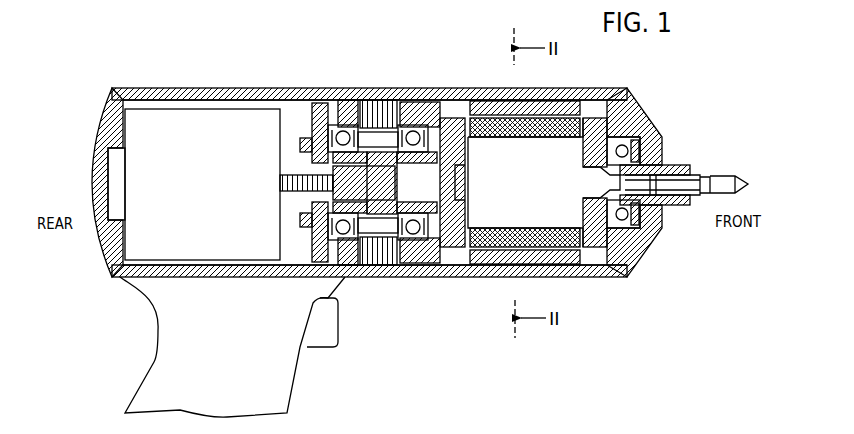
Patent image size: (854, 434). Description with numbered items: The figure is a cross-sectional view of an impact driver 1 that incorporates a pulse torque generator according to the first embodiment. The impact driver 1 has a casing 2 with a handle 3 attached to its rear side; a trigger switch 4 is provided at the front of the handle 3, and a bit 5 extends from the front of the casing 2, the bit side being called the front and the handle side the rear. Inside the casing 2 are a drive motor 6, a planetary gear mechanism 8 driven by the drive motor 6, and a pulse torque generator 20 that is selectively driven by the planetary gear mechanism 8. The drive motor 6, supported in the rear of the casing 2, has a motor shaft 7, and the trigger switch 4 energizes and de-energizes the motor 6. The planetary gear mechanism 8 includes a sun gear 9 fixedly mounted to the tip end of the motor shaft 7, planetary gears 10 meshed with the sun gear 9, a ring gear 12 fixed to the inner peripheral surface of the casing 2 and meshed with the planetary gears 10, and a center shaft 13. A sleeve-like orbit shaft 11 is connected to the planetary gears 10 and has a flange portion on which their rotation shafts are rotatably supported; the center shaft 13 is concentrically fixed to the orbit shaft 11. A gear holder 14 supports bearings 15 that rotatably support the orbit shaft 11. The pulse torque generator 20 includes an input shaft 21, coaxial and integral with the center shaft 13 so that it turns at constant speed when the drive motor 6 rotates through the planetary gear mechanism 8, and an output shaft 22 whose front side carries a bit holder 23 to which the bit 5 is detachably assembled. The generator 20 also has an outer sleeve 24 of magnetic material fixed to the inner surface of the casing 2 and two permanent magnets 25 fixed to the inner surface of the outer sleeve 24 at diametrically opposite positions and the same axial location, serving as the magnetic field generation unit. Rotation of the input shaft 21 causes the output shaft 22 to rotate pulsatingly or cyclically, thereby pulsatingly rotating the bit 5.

The impact driver 1 is at (464, 360).
The casing 2 is at (175, 88).
The handle 3 is at (160, 357).
The trigger switch 4 is at (317, 335).
The bit 5 is at (715, 176).
The drive motor 6 is at (137, 245).
The motor shaft 7 is at (300, 180).
The planetary gear mechanism 8 is at (480, 328).
The sun gear 9 is at (340, 278).
The planetary gears 10 is at (380, 277).
The orbit shaft 11 is at (440, 277).
The ring gear 12 is at (400, 277).
The center shaft 13 is at (462, 277).
The gear holder 14 is at (407, 103).
The bearings 15 is at (338, 103).
The pulse torque generator 20 is at (712, 328).
The input shaft 21 is at (608, 278).
The output shaft 22 is at (645, 270).
The bit holder 23 is at (682, 206).
The outer sleeve 24 is at (572, 278).
The permanent magnets 25 is at (590, 278).